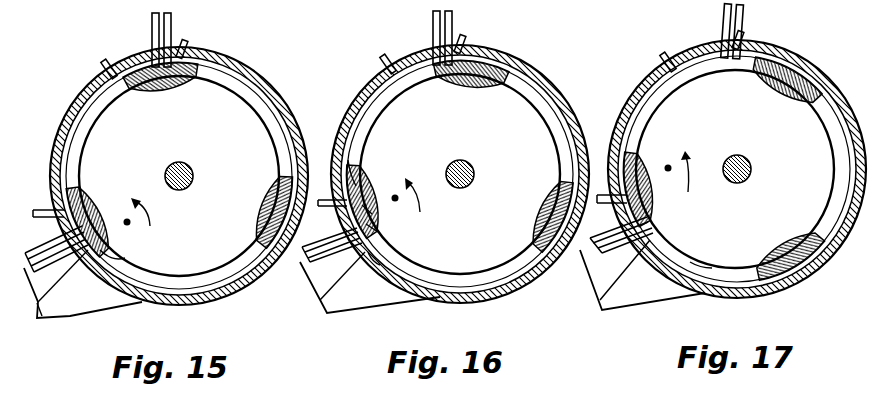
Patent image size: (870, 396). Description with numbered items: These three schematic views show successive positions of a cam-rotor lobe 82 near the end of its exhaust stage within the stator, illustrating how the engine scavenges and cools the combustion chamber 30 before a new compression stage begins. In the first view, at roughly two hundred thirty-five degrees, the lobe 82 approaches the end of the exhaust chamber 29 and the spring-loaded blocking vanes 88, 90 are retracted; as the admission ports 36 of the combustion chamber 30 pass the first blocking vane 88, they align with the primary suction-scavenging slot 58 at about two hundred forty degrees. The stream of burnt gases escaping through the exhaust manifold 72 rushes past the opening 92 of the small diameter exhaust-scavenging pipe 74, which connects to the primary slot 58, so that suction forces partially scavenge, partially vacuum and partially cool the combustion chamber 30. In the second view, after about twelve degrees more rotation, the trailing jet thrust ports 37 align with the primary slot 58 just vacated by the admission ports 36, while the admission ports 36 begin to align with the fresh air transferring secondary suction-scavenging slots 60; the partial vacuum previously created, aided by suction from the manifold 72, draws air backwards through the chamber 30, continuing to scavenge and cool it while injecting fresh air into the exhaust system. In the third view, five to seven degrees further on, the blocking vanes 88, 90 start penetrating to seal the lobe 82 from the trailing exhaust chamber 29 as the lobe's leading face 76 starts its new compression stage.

In FIG. 17, the exhaust chamber 29 is at (698, 263).
In FIG. 16, the combustion chamber 30 is at (366, 209).
In FIG. 15, the compression transferral admission ports 36 is at (93, 210).
In FIG. 16, the compression transferral admission ports 36 is at (363, 188).
In FIG. 16, the jet thrust ports 37 is at (372, 229).
In FIG. 15, the primary suction-scavenging slot 58 is at (118, 262).
In FIG. 16, the primary suction-scavenging slot 58 is at (350, 270).
In FIG. 16, the secondary suction-scavenging slots 60 is at (352, 172).
In FIG. 15, the exhaust manifold 72 is at (64, 318).
In FIG. 16, the exhaust manifold 72 is at (352, 312).
In FIG. 15, the exhaust-scavenging pipe 74 is at (29, 270).
In FIG. 16, the exhaust-scavenging pipe 74 is at (312, 272).
In FIG. 17, the leading face 76 is at (652, 114).
In FIG. 15, the lobe 82 is at (137, 212).
In FIG. 16, the lobe 82 is at (409, 181).
In FIG. 17, the lobe 82 is at (653, 157).
In FIG. 15, the blocking vane 88 is at (53, 268).
In FIG. 16, the blocking vane 88 is at (342, 276).
In FIG. 17, the blocking vane 88 is at (633, 268).
In FIG. 15, the blocking vane 90 is at (50, 250).
In FIG. 16, the blocking vane 90 is at (332, 203).
In FIG. 17, the blocking vane 90 is at (586, 262).
In FIG. 15, the opening 92 is at (37, 313).